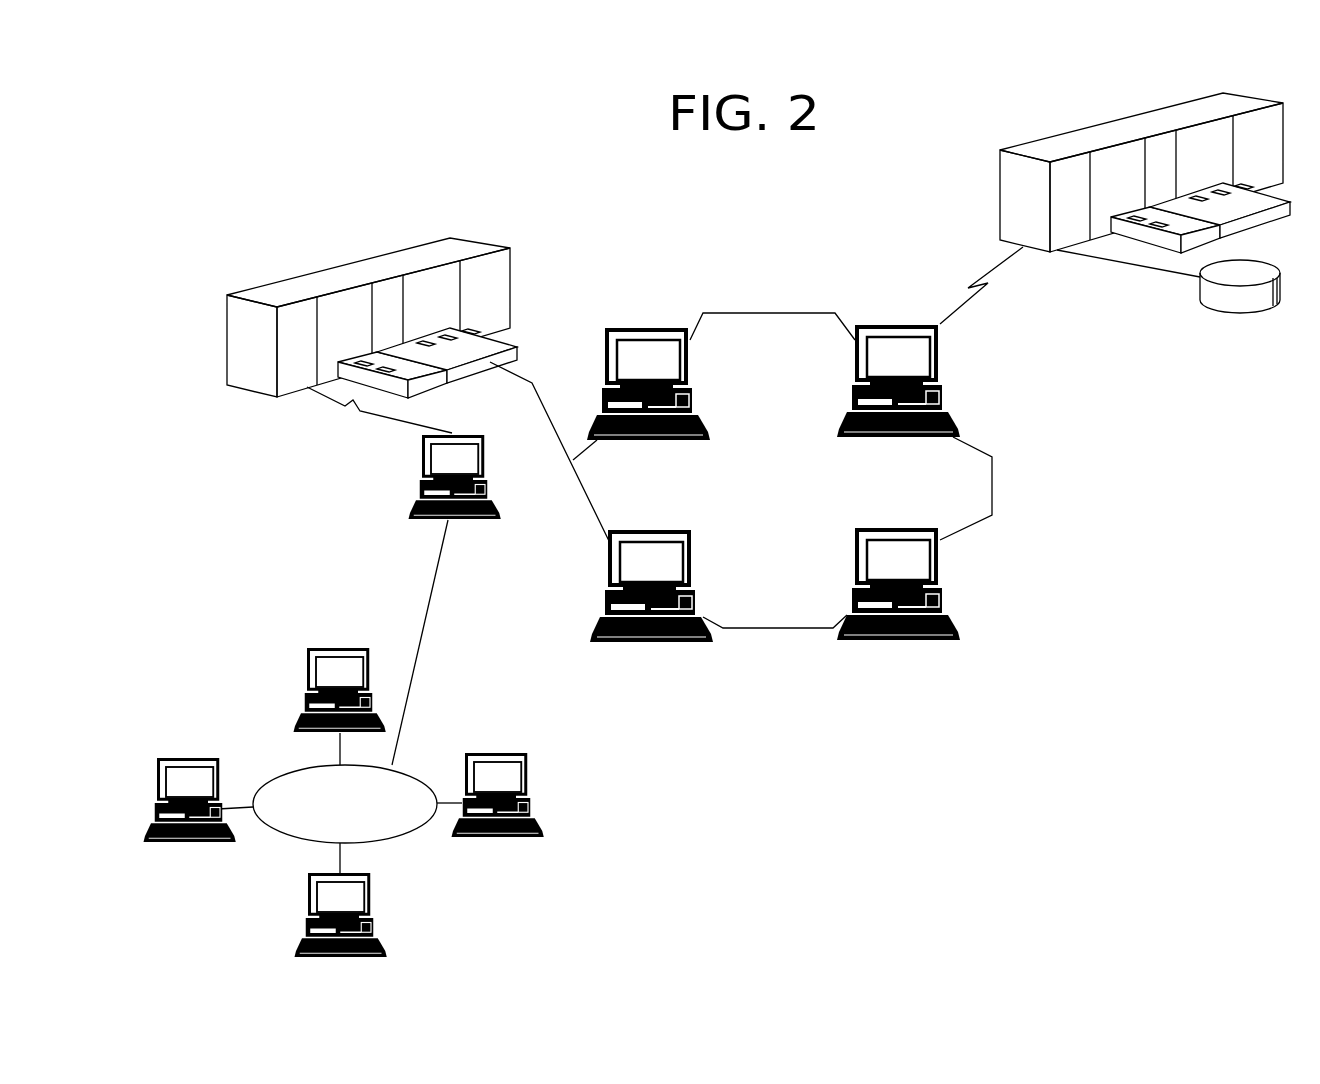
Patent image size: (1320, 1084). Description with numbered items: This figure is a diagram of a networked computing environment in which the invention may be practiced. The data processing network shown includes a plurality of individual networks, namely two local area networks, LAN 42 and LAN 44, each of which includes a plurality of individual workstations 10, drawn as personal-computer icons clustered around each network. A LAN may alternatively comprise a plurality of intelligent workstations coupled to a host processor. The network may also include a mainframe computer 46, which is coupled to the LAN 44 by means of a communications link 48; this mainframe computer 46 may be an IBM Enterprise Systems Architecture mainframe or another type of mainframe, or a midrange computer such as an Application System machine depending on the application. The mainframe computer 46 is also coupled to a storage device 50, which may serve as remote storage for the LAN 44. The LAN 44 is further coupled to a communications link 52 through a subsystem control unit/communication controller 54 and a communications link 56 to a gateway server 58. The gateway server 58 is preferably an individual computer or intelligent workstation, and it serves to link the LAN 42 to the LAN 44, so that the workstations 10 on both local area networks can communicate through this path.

The workstation 10 is at (642, 324).
The LAN 42 is at (340, 709).
The LAN 44 is at (782, 470).
The mainframe computer 46 is at (1065, 132).
The communications link 48 is at (990, 267).
The storage device 50 is at (1287, 278).
The communications link 52 is at (547, 398).
The subsystem control unit/communication controller 54 is at (375, 255).
The communications link 56 is at (348, 407).
The gateway server 58 is at (487, 450).